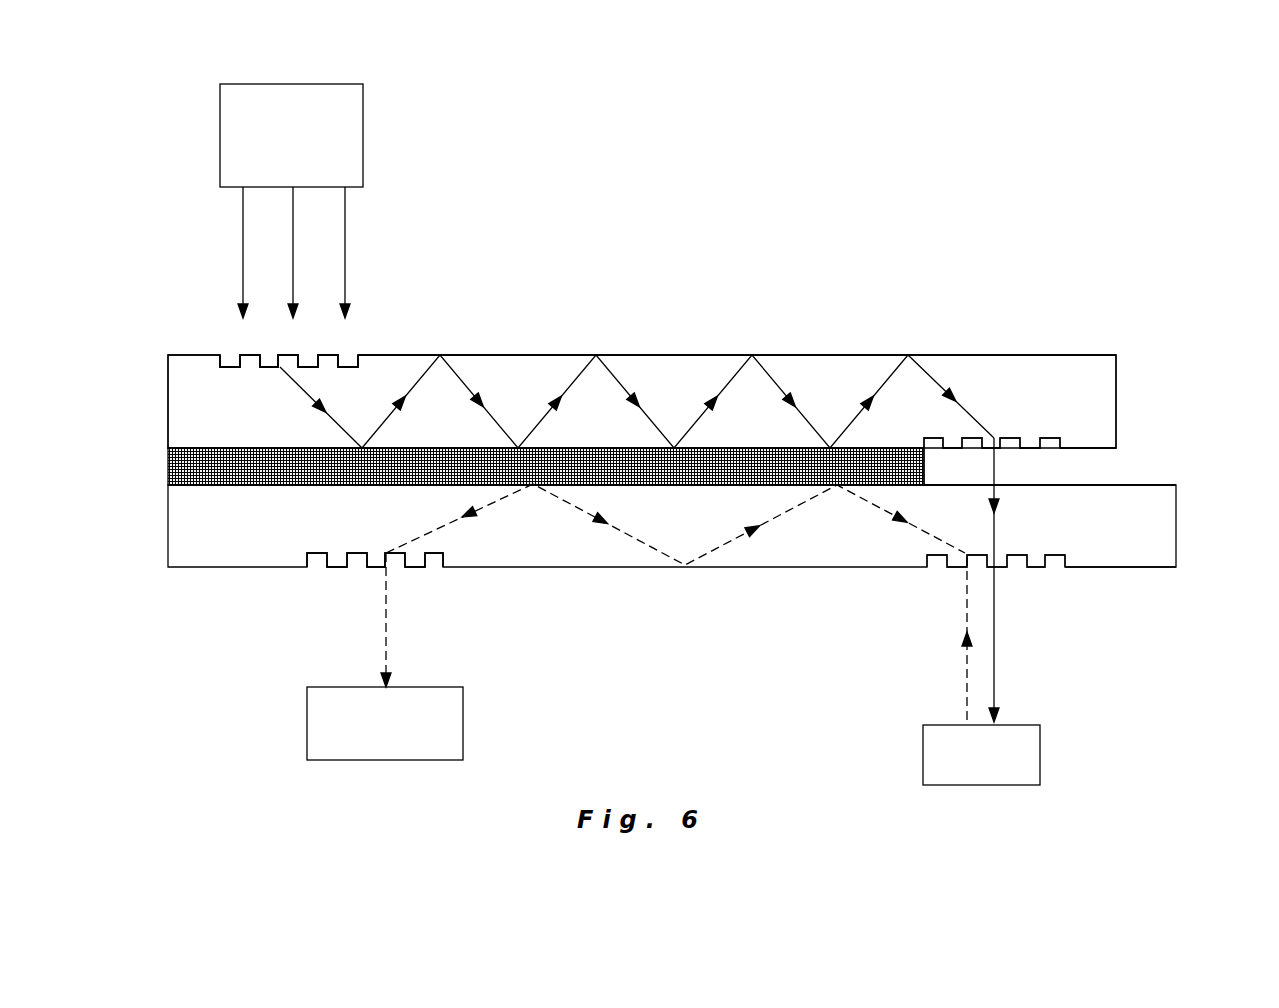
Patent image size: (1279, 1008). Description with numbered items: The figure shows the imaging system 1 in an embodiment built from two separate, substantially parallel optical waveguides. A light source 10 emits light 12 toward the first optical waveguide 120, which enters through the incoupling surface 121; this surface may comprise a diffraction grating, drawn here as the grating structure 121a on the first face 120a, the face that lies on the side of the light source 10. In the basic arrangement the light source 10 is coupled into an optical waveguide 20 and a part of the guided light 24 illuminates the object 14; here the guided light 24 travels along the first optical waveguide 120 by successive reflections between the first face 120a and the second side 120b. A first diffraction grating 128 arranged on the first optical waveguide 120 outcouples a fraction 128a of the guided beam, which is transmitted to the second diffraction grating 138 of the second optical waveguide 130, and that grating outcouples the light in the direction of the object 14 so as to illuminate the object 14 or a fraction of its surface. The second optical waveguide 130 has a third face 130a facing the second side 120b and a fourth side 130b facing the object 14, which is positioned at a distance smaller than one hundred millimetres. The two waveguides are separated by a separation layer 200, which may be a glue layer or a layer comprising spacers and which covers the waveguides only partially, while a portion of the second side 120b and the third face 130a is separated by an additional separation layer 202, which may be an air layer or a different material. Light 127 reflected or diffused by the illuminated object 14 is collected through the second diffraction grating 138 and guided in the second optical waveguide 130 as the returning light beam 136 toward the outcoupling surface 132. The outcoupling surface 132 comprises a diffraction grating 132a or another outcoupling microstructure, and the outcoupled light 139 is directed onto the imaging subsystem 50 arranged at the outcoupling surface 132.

The imaging system 1 is at (748, 265).
The light source 10 is at (337, 152).
The light beams 12 is at (352, 248).
The object 14 is at (1025, 752).
The optical waveguide 20 is at (667, 353).
The guided light 24 is at (463, 377).
The imaging subsystem 50 is at (435, 730).
The first optical waveguide 120 is at (1107, 405).
The first face 120a is at (817, 353).
The second side 120b is at (1097, 448).
The incoupling surface 121 is at (233, 337).
The input grating structure 121a is at (332, 353).
The light output to detector 127 is at (965, 650).
The first diffraction grating 128 is at (1044, 437).
The outcoupled fraction of guided light 128a is at (993, 643).
The second optical waveguide 130 is at (587, 557).
The third face 130a is at (1152, 486).
The fourth side 130b is at (1153, 568).
The outcoupling surface 132 is at (362, 587).
The diffraction grating 132a is at (357, 552).
The returning light beam 136 is at (768, 520).
The second diffraction grating 138 is at (1038, 568).
The output light beam 139 is at (387, 622).
The separation layer 200 is at (172, 455).
The additional separation layer 202 is at (1045, 476).